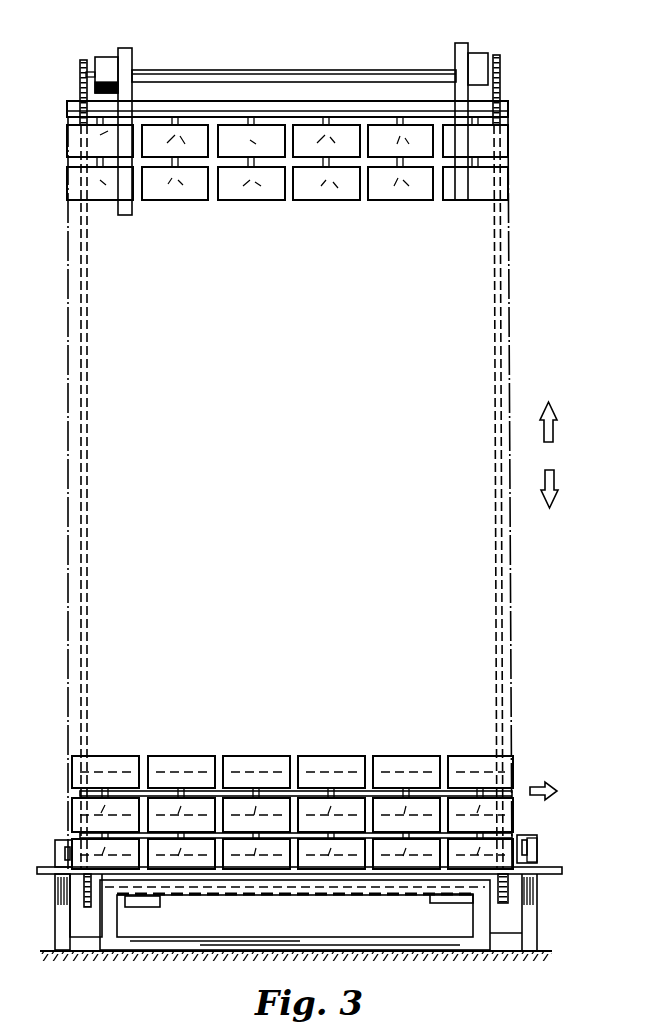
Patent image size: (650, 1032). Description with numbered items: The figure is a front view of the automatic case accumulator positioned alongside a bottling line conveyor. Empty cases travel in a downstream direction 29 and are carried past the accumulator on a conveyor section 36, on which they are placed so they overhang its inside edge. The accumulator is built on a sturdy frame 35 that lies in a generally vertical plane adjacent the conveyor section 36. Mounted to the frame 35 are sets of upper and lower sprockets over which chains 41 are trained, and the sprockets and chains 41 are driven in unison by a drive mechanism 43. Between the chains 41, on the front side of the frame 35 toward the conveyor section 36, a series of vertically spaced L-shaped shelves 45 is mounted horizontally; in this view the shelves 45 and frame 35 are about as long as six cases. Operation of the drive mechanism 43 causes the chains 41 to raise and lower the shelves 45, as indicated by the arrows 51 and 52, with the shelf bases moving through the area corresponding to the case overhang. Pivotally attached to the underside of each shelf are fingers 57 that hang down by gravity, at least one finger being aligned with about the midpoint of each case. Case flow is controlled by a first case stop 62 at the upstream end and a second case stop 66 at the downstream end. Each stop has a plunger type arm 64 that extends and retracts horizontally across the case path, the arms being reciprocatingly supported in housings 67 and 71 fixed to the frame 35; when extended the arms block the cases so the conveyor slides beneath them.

The downstream direction 29 is at (540, 786).
The frame 35 is at (63, 928).
The conveyor section 36 is at (546, 874).
The chains 41 is at (80, 62).
The drive mechanism 43 is at (382, 880).
The shelves 45 is at (462, 777).
The arrow indicating raising of shelves 51 is at (555, 416).
The arrow indicating lowering of shelves 52 is at (556, 474).
The fingers 57 is at (252, 796).
The first case stop 62 is at (62, 830).
The plunger type arm 64 is at (56, 845).
The second case stop 66 is at (540, 852).
The housing 67 is at (62, 853).
The housing 71 is at (538, 846).